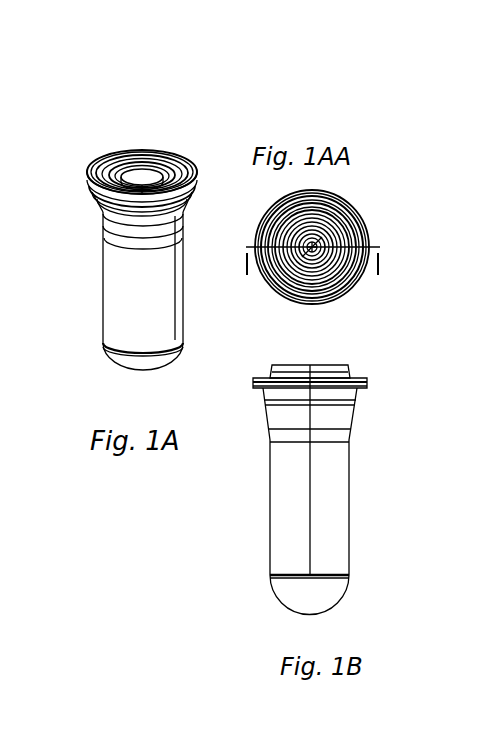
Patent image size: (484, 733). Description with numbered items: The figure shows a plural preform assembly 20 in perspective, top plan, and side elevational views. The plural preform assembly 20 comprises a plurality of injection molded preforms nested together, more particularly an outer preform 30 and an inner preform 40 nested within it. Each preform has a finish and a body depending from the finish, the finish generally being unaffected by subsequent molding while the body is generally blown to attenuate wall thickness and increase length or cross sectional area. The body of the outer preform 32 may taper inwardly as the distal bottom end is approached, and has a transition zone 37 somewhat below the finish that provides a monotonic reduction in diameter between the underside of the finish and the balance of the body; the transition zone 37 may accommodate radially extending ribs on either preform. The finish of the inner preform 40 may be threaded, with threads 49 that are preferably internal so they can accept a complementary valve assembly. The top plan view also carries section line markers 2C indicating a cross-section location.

In FIG. 1A, the plural preform assembly 20 is at (55, 110).
In FIG. 1AA, the plural preform assembly 20 is at (401, 108).
In FIG. 1B, the plural preform assembly 20 is at (410, 553).
In FIG. 1A, the outer preform 30 is at (109, 310).
In FIG. 1AA, the outer preform 30 is at (303, 285).
In FIG. 1B, the outer preform 30 is at (276, 529).
In FIG. 1A, the body of the outer preform 32 is at (110, 346).
In FIG. 1B, the body of the outer preform 32 is at (339, 497).
In FIG. 1B, the transition zone 37 is at (357, 402).
In FIG. 1A, the inner preform 40 is at (198, 150).
In FIG. 1AA, the inner preform 40 is at (320, 251).
In FIG. 1B, the inner preform 40 is at (272, 373).
In FIG. 1A, the threads 49 is at (140, 142).
In FIG. 1AA, the section line 2C- 2C is at (340, 186).